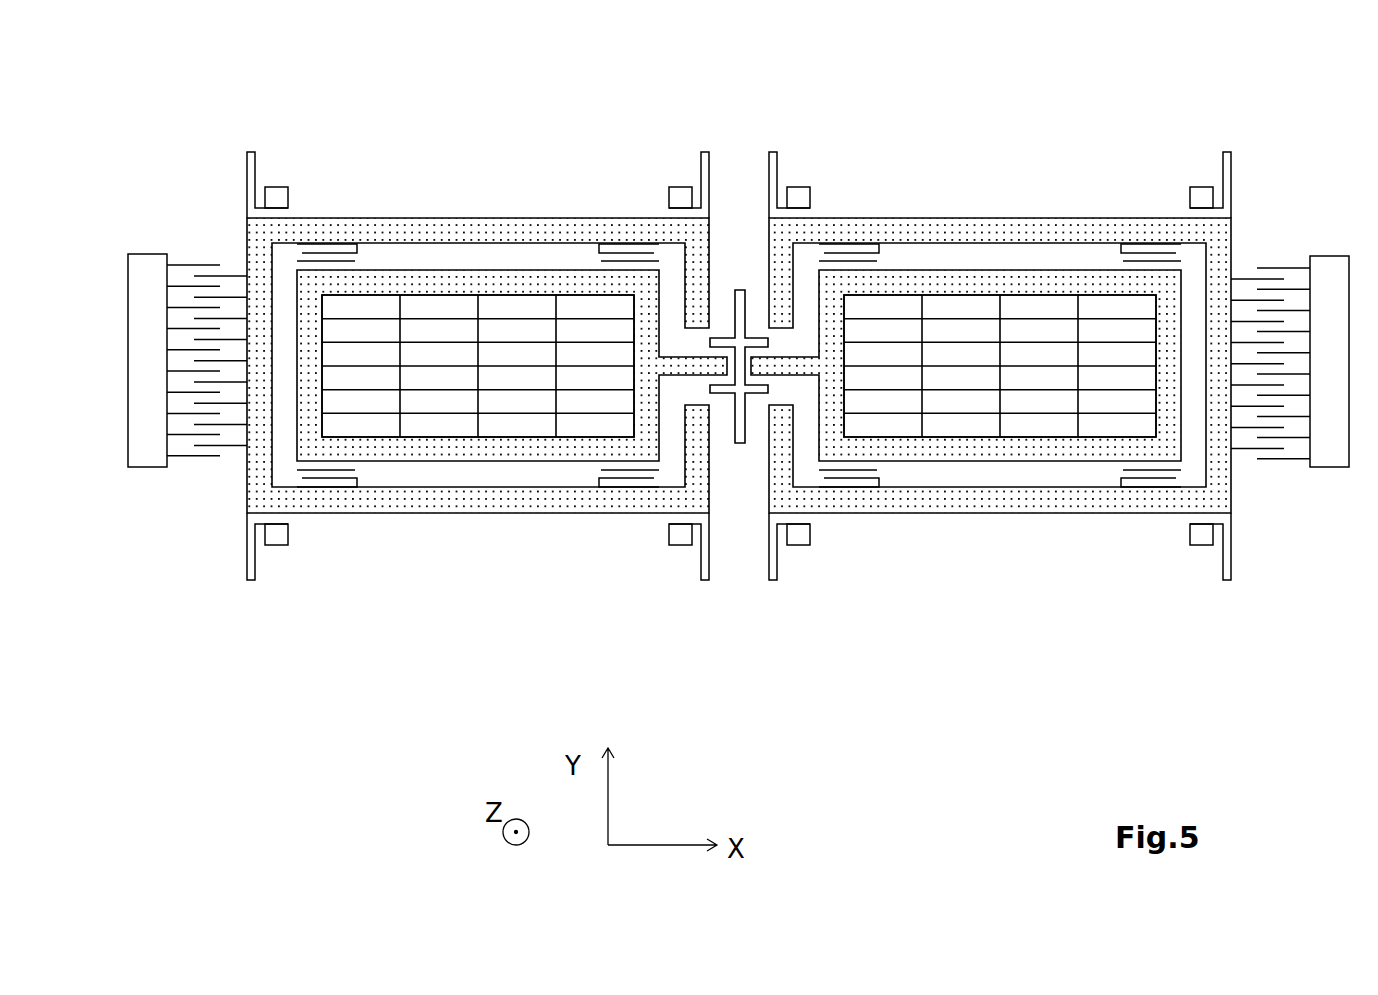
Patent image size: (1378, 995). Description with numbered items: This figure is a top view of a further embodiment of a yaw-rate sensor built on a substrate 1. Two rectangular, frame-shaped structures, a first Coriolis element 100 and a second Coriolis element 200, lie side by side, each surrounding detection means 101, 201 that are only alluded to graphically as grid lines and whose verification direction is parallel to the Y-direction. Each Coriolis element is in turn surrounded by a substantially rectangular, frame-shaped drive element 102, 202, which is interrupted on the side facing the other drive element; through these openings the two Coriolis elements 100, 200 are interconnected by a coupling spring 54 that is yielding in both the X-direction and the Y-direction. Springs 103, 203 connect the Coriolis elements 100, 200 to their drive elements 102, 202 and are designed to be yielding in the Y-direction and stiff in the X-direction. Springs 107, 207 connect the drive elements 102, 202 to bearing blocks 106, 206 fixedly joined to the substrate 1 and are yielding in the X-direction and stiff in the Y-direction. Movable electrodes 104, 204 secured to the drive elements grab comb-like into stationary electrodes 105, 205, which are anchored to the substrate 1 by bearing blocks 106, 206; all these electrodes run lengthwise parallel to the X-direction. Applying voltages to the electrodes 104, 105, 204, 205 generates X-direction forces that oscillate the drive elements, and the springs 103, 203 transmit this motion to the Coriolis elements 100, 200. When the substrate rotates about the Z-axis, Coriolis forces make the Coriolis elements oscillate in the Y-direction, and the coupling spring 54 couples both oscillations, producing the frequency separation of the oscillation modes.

The substrate 1 is at (507, 636).
The coupling spring 54 is at (740, 445).
The first Coriolis element 100 is at (407, 280).
The detection means 101 is at (483, 325).
The drive element 102 is at (347, 226).
The spring 103 is at (620, 252).
The movable electrode 104 is at (230, 273).
The stationary electrode 105 is at (193, 263).
The bearing block 106 is at (277, 196).
The spring 107 is at (247, 163).
The second Coriolis element 200 is at (980, 280).
The detection means 201 is at (1035, 320).
The drive element 202 is at (960, 230).
The spring 203 is at (845, 255).
The movable electrode 204 is at (1250, 278).
The stationary electrode 205 is at (1297, 270).
The bearing block 206 is at (800, 192).
The spring 207 is at (775, 153).